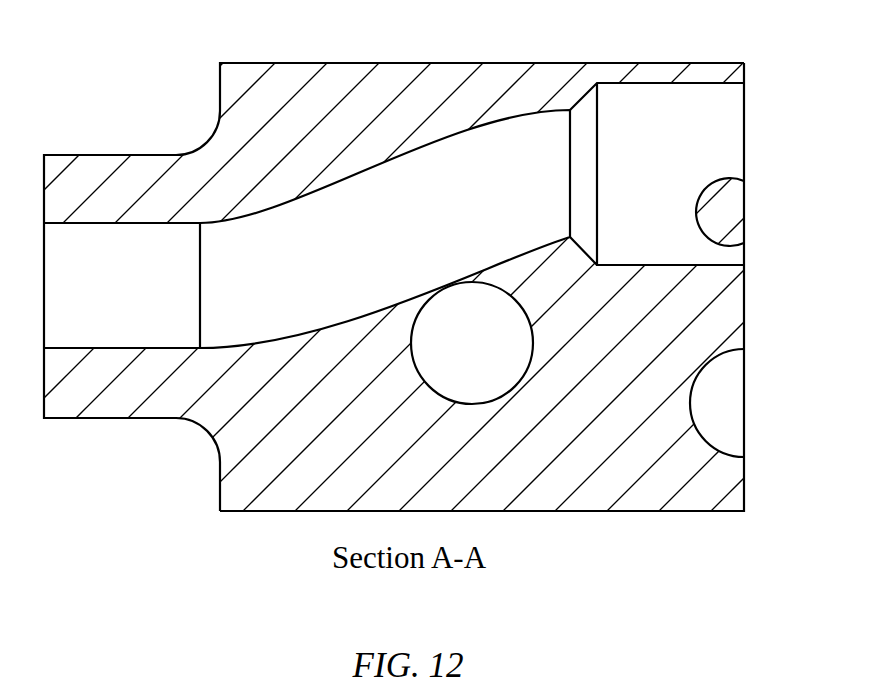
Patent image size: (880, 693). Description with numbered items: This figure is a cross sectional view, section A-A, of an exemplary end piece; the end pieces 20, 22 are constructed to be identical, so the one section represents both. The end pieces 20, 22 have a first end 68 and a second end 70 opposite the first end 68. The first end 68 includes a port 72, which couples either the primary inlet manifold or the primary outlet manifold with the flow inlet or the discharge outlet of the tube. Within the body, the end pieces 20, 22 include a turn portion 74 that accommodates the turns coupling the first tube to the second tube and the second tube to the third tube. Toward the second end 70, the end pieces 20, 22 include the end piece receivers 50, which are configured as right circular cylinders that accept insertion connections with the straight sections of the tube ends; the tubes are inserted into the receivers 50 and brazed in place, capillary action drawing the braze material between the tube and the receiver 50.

The end piece 20 is at (440, 329).
The end piece 22 is at (440, 329).
The end piece receiver 50 is at (756, 117).
The first end 68 is at (43, 140).
The second end 70 is at (741, 527).
The port 72 is at (85, 298).
The turn portion 74 is at (458, 363).